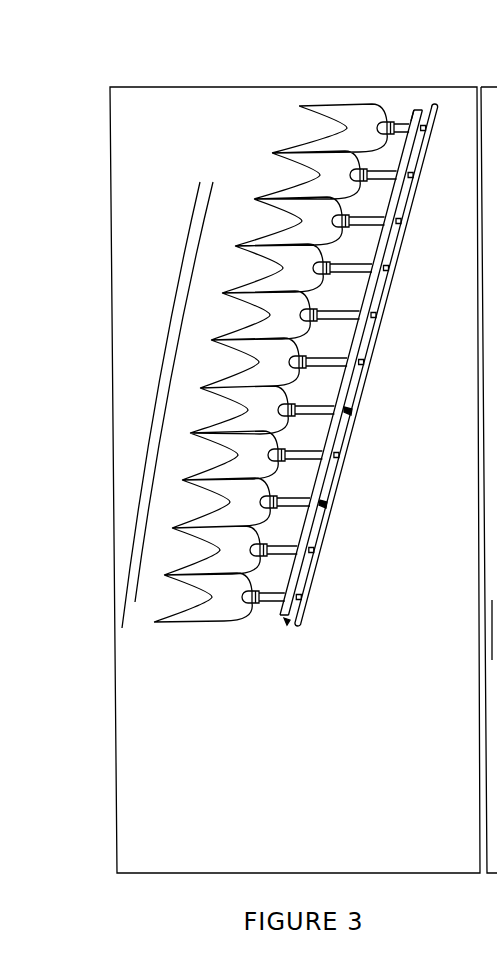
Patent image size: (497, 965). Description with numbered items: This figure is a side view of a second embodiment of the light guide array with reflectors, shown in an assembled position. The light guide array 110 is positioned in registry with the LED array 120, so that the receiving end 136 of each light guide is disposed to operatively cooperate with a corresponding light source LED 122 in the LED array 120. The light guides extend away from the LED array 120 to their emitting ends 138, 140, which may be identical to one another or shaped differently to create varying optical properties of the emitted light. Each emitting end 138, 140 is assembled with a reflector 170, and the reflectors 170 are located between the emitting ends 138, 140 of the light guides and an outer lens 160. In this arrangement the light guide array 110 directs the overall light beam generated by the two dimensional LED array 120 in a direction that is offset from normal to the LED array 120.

The light guide array 110 is at (363, 100).
The LED array 120 is at (412, 200).
The LED 122 is at (413, 174).
The receiving end 136 is at (412, 116).
The emitting end 138 is at (380, 127).
The emitting end 140 is at (354, 172).
The outer lens 160 is at (158, 357).
The reflector 170 is at (292, 266).